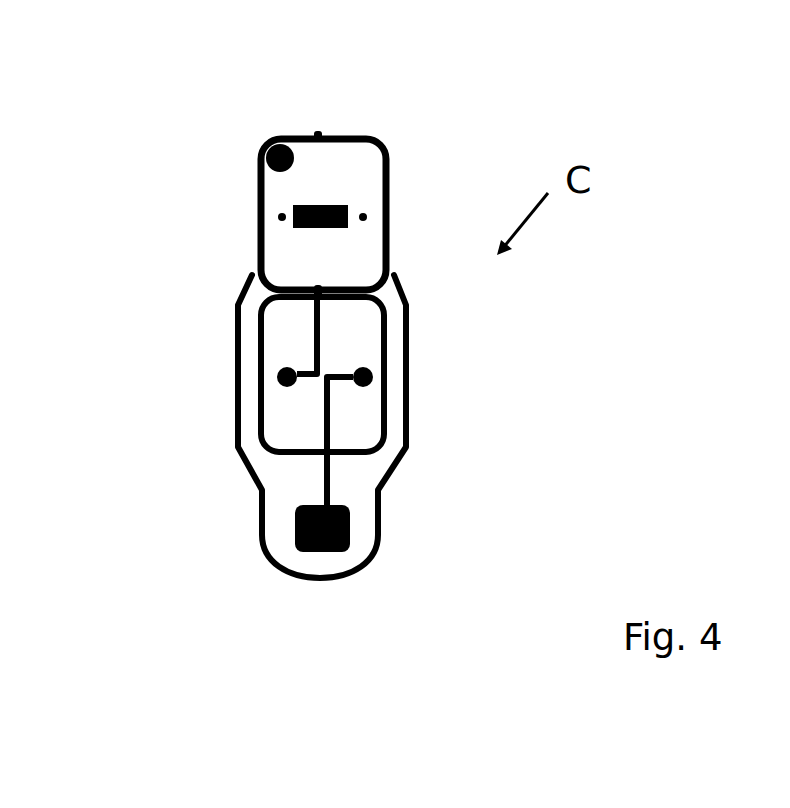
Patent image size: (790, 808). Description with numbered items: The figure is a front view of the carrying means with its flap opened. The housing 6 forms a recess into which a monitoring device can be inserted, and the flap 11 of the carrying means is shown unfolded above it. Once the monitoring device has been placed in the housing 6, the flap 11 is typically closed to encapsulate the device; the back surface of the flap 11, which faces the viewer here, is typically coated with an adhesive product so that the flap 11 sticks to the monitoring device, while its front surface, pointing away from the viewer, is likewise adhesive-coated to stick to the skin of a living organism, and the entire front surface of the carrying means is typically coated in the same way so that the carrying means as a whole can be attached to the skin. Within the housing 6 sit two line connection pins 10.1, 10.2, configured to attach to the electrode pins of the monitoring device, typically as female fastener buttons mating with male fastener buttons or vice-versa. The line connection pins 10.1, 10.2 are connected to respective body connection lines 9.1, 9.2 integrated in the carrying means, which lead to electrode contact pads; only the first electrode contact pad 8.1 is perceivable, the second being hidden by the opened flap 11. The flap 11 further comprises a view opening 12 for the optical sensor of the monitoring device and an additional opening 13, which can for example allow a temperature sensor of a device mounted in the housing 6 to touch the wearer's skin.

The housing 6 is at (355, 348).
The first electrode contact pad 8.1 is at (307, 537).
The body connection line 9.1 is at (328, 455).
The body connection line 9.2 is at (313, 338).
The line connection pin 10.1 is at (287, 377).
The line connection pin 10.2 is at (363, 377).
The flap 11 is at (365, 182).
The view opening 12 is at (327, 215).
The additional opening 13 is at (283, 160).